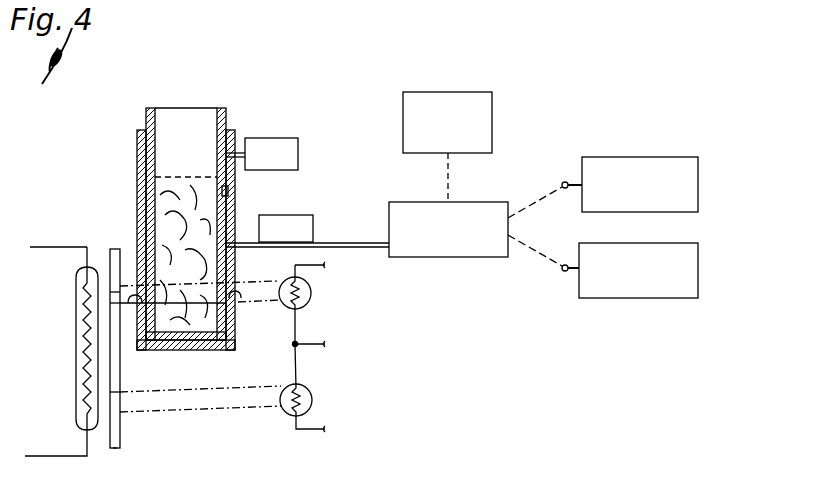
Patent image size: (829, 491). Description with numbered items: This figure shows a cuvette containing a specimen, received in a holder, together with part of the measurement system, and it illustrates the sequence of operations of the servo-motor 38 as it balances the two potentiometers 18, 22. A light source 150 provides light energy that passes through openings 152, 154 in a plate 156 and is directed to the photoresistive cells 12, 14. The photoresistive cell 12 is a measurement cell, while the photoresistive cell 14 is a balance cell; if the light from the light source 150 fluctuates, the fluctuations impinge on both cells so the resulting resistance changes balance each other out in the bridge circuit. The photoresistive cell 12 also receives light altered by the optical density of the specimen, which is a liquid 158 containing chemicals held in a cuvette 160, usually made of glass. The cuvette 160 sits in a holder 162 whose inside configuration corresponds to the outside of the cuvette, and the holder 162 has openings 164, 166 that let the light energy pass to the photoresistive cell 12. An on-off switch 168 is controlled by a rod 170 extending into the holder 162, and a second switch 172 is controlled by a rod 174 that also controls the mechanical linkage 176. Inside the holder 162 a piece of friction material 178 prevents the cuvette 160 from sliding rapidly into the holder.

The photoresistive cell 12 is at (311, 294).
The photoresistive cell 14 is at (308, 388).
The potentiometer 18 is at (700, 160).
The potentiometer 22 is at (682, 243).
The servo-motor 38 is at (480, 92).
The light source 150 is at (77, 327).
The opening 152 is at (110, 292).
The opening 154 is at (112, 410).
The plate 156 is at (115, 450).
The liquid 158 is at (165, 205).
The cuvette 160 is at (227, 112).
The holder 162 is at (137, 151).
The opening 164 is at (128, 303).
The opening 166 is at (241, 298).
The on-off switch 168 is at (297, 140).
The rod 170 is at (236, 152).
The second switch 172 is at (313, 224).
The rod 174 is at (246, 248).
The mechanical linkage 176 is at (468, 202).
The friction material 178 is at (232, 195).